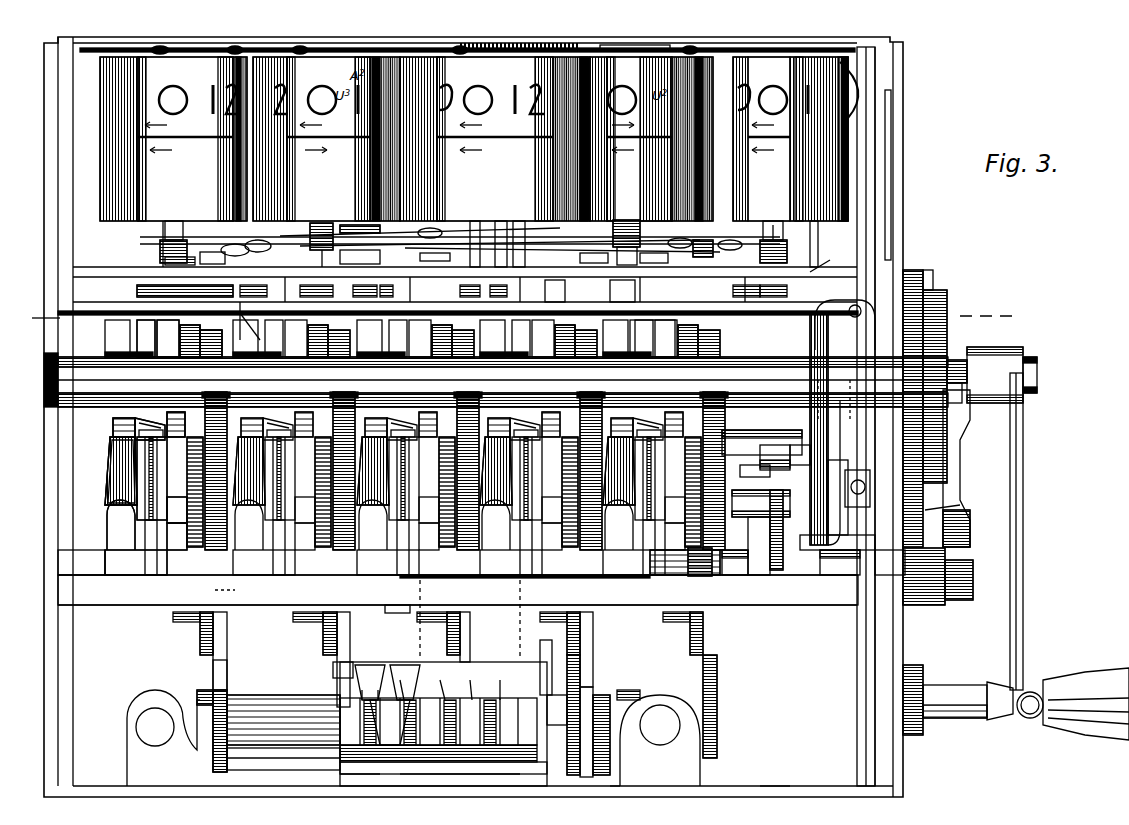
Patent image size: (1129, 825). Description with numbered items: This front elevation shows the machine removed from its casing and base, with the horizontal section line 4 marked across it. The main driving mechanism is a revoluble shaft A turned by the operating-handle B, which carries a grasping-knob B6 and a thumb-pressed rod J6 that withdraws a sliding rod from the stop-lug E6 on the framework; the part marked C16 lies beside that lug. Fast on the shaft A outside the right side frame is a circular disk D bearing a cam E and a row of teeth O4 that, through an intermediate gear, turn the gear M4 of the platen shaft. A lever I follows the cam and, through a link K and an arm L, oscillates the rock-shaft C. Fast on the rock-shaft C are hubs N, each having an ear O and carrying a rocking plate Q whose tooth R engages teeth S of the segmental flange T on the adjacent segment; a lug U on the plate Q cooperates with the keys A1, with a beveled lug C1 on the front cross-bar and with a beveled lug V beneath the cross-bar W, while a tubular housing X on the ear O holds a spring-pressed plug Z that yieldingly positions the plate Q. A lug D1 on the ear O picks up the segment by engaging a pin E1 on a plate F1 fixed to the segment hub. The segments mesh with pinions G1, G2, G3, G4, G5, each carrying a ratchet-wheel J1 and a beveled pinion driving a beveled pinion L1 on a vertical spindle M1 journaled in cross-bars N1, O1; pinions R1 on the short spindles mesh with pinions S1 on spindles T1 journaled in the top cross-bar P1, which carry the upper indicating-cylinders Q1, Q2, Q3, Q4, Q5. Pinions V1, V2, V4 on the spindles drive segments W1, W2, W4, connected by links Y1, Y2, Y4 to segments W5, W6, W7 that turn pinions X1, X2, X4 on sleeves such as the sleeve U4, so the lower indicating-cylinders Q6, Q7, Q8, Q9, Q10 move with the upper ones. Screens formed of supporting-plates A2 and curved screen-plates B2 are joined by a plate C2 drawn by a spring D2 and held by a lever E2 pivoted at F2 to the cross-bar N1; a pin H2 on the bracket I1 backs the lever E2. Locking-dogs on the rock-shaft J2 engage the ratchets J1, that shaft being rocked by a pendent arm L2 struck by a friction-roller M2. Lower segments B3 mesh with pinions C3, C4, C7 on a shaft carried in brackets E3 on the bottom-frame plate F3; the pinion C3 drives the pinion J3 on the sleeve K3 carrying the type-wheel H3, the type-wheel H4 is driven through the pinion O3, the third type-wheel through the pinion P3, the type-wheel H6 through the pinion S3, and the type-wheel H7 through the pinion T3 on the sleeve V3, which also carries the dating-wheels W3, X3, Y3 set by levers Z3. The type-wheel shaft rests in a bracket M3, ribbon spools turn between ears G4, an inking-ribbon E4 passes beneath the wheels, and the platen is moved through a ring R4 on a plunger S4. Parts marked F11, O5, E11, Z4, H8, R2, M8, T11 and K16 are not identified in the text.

The screen-plate B2 is at (120, 62).
The supporting-plate A2 is at (170, 52).
The indicating-cylinder Q5 is at (220, 57).
The horizontal plate C2 is at (250, 62).
The indicating-cylinder Q4 is at (360, 57).
The indicating-cylinder Q3 is at (505, 50).
The spring D2 is at (545, 45).
The top cross-bar P1 is at (650, 50).
The indicating cylinder Q2 is at (690, 57).
The indicating-cylinder Q1 is at (795, 62).
The lever E2 is at (865, 200).
The circular disk D is at (930, 275).
The pin F11 is at (935, 300).
The section line 4 is at (521, 318).
The revoluble shaft A is at (957, 360).
The key A1 is at (1037, 378).
The lever I is at (955, 417).
The operating-handle B is at (1023, 452).
The link K is at (962, 470).
The gear M4 is at (960, 505).
The arm L is at (230, 320).
The rock-shaft C is at (97, 555).
The stop-lug E6 is at (950, 685).
The handle collar C16 is at (990, 680).
The rod J6 is at (1030, 718).
The grasping-knob B6 is at (1085, 690).
The bottom-frame plate F3 is at (765, 786).
The inking-ribbon E4 is at (637, 769).
The bracket M3 is at (660, 740).
The sleeve K3 is at (610, 745).
The pinion C3 is at (717, 690).
The bracket E3 is at (205, 675).
The pinion J3 is at (601, 715).
The pinion C4 is at (593, 690).
The second segment B3 is at (227, 640).
The pin E1 is at (172, 620).
The plate F1 is at (198, 635).
The rod O5 is at (540, 640).
The type-wheel H3 is at (520, 715).
The type-wheel H4 is at (443, 724).
The pinion P3 is at (484, 682).
The pinion O3 is at (514, 682).
The pinion S3 is at (458, 682).
The dating-wheel W3 is at (418, 689).
The counter wheel E11 is at (413, 704).
The key or lever Z3 is at (340, 670).
The dating-wheel Y3 is at (431, 258).
The dating-wheel X3 is at (345, 225).
The sleeve V3 is at (360, 257).
The ring R4 is at (325, 716).
The pinion T3 is at (212, 755).
The pinion G4 is at (328, 357).
The pinion C7 is at (227, 680).
The plate Z4 is at (380, 775).
The type-wheel H7 is at (410, 776).
The plate H8 is at (440, 776).
The type-wheel H6 is at (480, 776).
The plunger S4 is at (397, 600).
The friction-roller M2 is at (458, 590).
The beveled lug C1 is at (530, 590).
The hub N is at (136, 563).
The ear O is at (121, 525).
The teeth S is at (190, 545).
The segmental flange T is at (200, 510).
The lug D1 is at (170, 495).
The tubular housing X is at (152, 478).
The rocking plate Q is at (121, 471).
The plug Z is at (112, 450).
The lug U is at (124, 418).
The beveled lug V is at (150, 418).
The tooth R is at (176, 412).
The cross-bar W is at (503, 380).
The pinion G5 is at (200, 357).
The ratchet-wheel J1 is at (230, 357).
The beveled pinion L1 is at (290, 357).
The pinion G3 is at (452, 357).
The pinion G2 is at (575, 357).
The pinion G1 is at (698, 357).
The gear R2 is at (211, 343).
The vertical spindle M1 is at (652, 337).
The pinion S1 is at (137, 292).
The pinion R1 is at (305, 268).
The cross-bar N1 is at (562, 291).
The cross-bar O1 is at (640, 291).
The cam E is at (242, 326).
The pivot F2 is at (815, 325).
The indicating-cylinder Q10 is at (155, 230).
The pinion V4 is at (164, 258).
The pinion X4 is at (178, 240).
The sleeve U4 is at (163, 227).
The segment W4 is at (214, 264).
The link Y2 is at (310, 250).
The pawl M8 is at (245, 245).
The indicating-cylinder Q9 is at (316, 227).
The segment W7 is at (427, 216).
The indicating-cylinder Q8 is at (469, 230).
The vertical spindle T1 is at (470, 258).
The link Y4 is at (496, 244).
The link Y1 is at (516, 244).
The segment W6 is at (600, 235).
The pinion X2 is at (630, 225).
The segment W2 is at (594, 258).
The pinion V2 is at (654, 258).
The indicating-cylinder Q7 is at (670, 240).
The segment W5 is at (735, 232).
The segment W1 is at (730, 258).
The pinion X1 is at (787, 245).
The pinion V1 is at (773, 225).
The indicating-cylinder Q6 is at (819, 244).
The rod T11 is at (828, 258).
The bracket I1 is at (845, 418).
The rock-shaft J2 is at (800, 453).
The pin H2 is at (790, 470).
The pendent arm L2 is at (755, 518).
The lever K16 is at (770, 525).
The row of teeth O4 is at (866, 488).